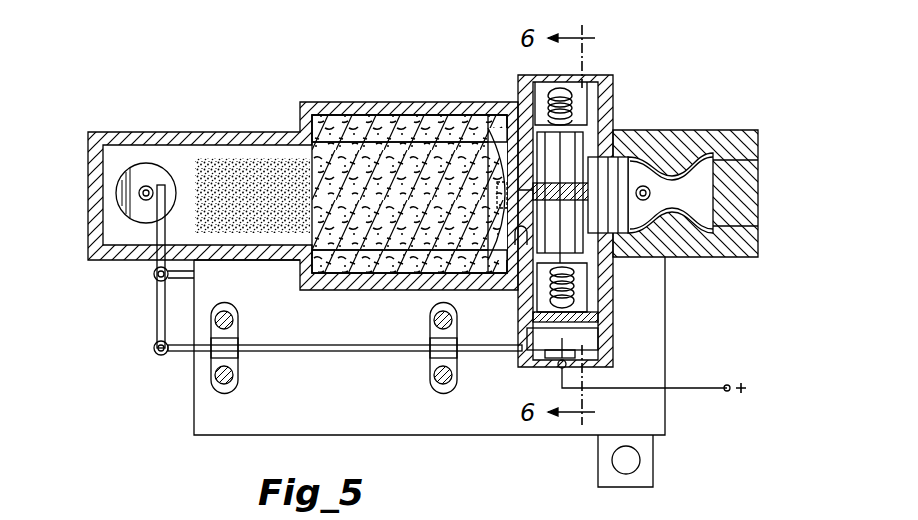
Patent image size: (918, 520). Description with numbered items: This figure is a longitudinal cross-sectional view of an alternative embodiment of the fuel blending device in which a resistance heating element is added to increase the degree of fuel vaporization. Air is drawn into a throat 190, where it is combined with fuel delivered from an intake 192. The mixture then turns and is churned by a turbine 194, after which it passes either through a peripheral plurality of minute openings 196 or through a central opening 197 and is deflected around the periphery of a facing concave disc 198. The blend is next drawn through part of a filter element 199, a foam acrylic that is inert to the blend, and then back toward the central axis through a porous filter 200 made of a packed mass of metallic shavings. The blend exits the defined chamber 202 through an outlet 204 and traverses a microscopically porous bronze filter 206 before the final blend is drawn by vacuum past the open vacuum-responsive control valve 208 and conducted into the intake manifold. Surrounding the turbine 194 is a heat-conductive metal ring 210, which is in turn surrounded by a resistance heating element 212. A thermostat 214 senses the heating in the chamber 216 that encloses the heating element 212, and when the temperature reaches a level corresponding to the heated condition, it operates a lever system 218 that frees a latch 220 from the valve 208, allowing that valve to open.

The throat 190 is at (750, 218).
The intake 192 is at (650, 188).
The turbine 194 is at (575, 210).
The peripheral plurality of minute openings 196 is at (516, 108).
The central opening 197 is at (518, 262).
The facing concave disc 198 is at (492, 128).
The filter element 199 is at (415, 125).
The porous filter 200 is at (418, 278).
The chamber 202 is at (355, 280).
The outlet 204 is at (300, 152).
The microscopically porous bronze filter 206 is at (283, 230).
The vacuum-responsive control valve 208 is at (118, 203).
The heat-conductive metal ring 210 is at (585, 268).
The resistance heating element 212 is at (545, 295).
The thermostat 214 is at (540, 340).
The chamber 216 is at (590, 325).
The lever system 218 is at (392, 352).
The latch 220 is at (170, 172).